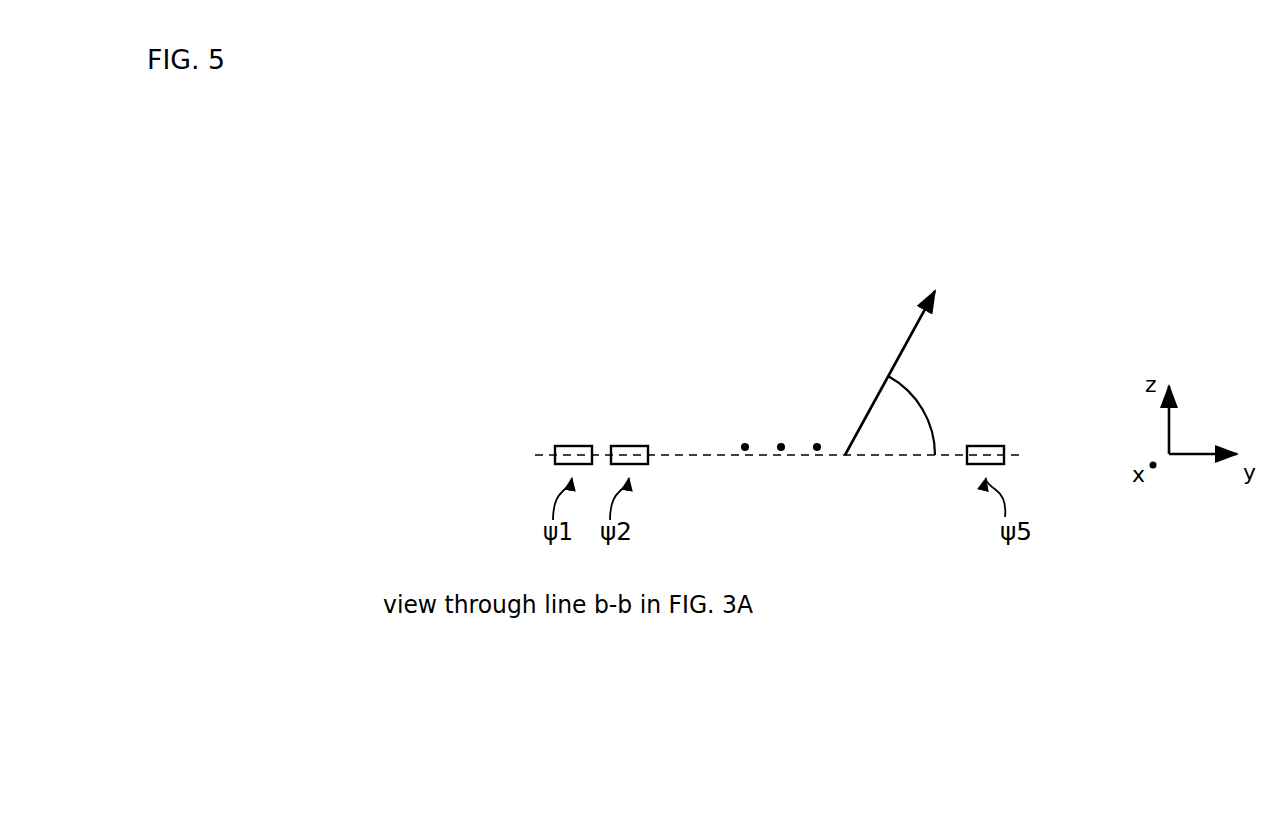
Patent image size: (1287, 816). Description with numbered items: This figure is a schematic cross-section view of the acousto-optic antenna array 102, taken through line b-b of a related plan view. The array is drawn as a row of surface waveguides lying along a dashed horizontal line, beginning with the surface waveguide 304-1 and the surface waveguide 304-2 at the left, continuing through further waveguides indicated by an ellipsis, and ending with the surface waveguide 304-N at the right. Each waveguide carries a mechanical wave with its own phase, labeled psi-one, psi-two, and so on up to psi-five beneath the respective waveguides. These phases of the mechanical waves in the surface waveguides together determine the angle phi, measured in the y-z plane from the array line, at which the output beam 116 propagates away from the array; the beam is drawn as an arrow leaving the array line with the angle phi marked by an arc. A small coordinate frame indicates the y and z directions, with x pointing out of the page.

The acousto-optic antenna array 102 is at (543, 302).
The surface waveguide 304-1 is at (573, 446).
The surface waveguide 304-2 is at (630, 446).
The surface waveguide 304-N is at (985, 447).
The output beam 116 is at (917, 318).